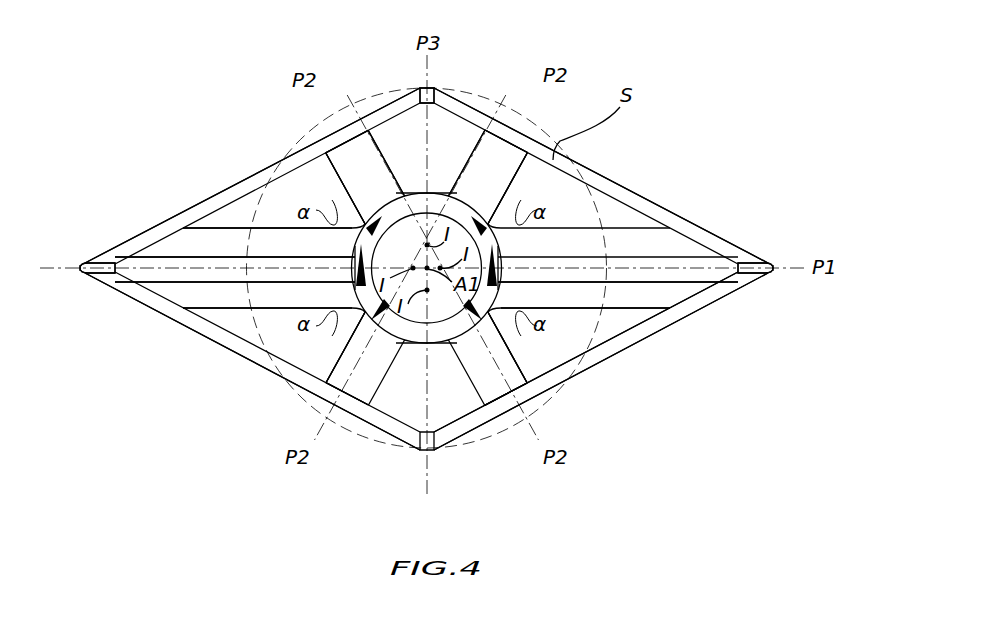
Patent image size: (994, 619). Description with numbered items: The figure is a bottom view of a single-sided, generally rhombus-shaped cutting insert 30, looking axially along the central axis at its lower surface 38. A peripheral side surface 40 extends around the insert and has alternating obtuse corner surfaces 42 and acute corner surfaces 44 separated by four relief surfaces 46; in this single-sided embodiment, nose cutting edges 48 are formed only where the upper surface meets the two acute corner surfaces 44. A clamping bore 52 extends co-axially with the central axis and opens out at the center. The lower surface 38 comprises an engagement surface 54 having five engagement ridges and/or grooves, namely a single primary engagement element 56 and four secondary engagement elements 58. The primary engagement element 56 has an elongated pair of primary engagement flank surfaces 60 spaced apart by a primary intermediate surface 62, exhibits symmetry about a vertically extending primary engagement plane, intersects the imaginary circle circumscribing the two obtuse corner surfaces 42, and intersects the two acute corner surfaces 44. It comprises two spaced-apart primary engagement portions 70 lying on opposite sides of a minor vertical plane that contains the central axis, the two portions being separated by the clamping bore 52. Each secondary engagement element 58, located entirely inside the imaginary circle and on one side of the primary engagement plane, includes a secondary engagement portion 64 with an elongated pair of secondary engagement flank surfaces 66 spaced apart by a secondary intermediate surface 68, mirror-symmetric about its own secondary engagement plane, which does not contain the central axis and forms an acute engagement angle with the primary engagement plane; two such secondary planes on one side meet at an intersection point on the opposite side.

The cutting insert 30 is at (591, 91).
The lower surface 38 is at (444, 145).
The peripheral side surface 40 is at (653, 363).
The obtuse corner surfaces 42 is at (437, 450).
The acute corner surfaces 44 is at (770, 276).
The relief surfaces 46 is at (653, 332).
The nose cutting edges 48 is at (770, 272).
The clamping bore 52 is at (397, 367).
The engagement surface 54 is at (417, 162).
The primary engagement element 56 is at (672, 250).
The secondary engagement elements 58 is at (540, 345).
The primary engagement flank surfaces 60 is at (160, 257).
The primary intermediate surface 62 is at (118, 258).
The secondary engagement portion 64 is at (542, 357).
The secondary engagement flank surfaces 66 is at (513, 350).
The secondary intermediate surface 68 is at (533, 398).
The primary engagement portions 70 is at (630, 338).